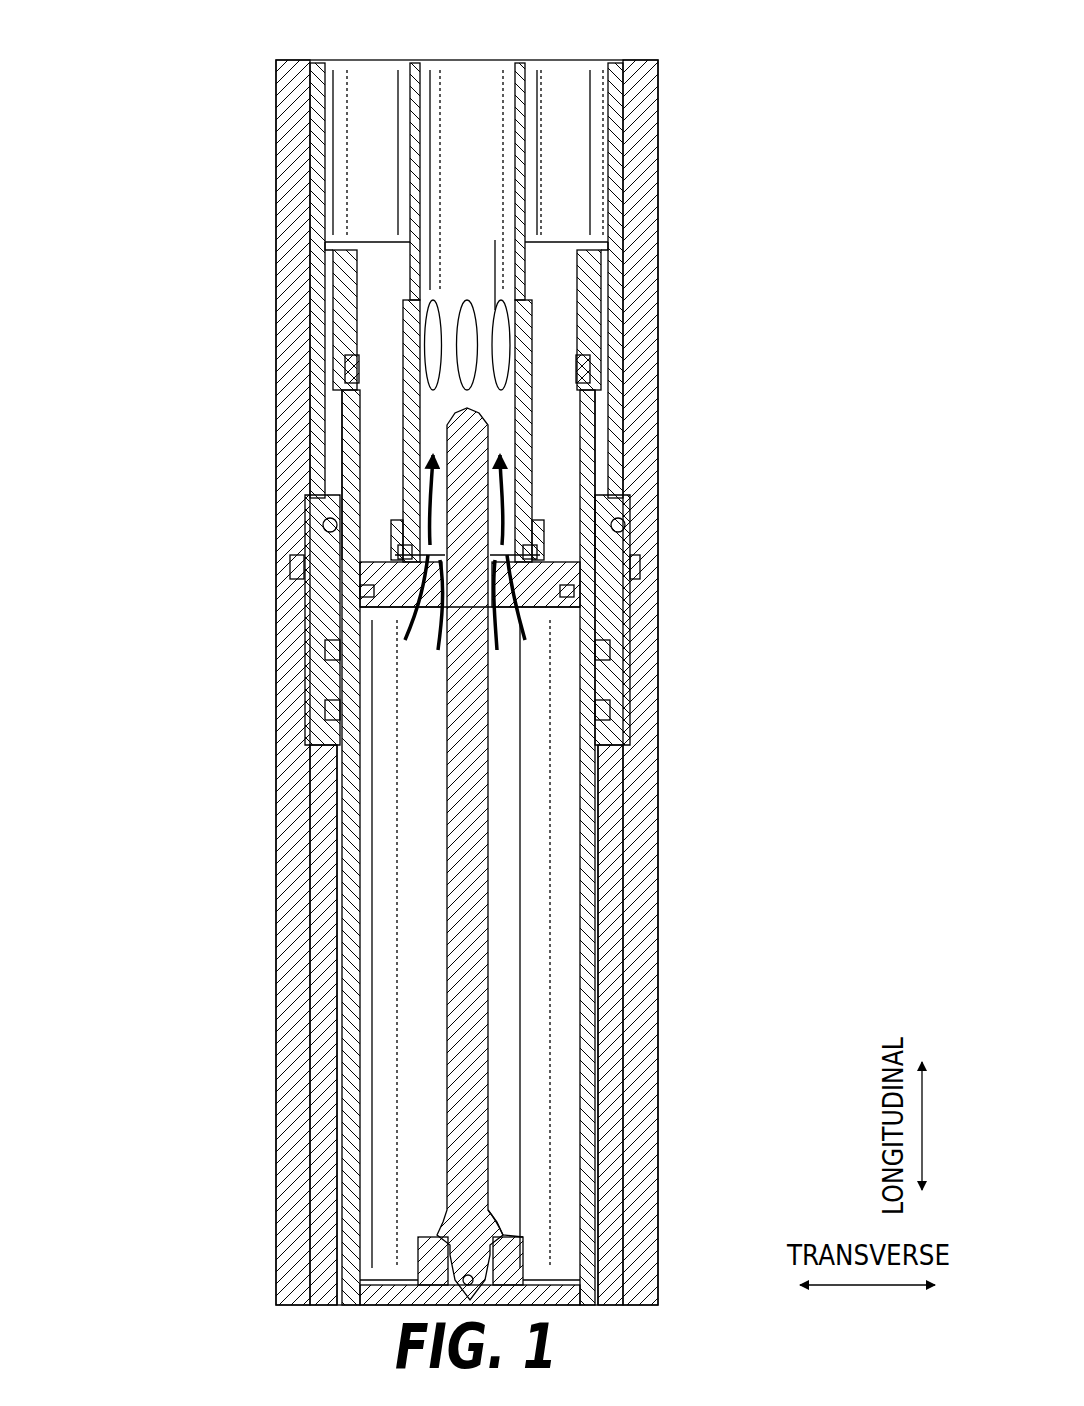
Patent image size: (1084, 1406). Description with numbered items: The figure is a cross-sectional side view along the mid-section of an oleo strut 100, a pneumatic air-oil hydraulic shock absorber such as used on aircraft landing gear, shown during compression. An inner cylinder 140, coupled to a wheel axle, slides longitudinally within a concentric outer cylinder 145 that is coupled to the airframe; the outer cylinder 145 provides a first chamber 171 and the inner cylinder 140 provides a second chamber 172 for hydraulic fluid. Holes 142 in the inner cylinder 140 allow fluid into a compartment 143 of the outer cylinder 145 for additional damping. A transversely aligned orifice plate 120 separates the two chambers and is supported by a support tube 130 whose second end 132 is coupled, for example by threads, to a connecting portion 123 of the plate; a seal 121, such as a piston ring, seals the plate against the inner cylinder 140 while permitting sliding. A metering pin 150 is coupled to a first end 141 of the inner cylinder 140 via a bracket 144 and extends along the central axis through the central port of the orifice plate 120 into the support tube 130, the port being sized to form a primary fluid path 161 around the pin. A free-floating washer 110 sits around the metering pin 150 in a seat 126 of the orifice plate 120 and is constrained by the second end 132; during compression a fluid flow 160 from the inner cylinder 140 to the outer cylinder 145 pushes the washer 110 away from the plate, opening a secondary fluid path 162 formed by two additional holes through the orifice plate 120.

The oleo strut 100 is at (145, 130).
The free-floating washer 110 is at (398, 565).
The orifice plate 120 is at (392, 545).
The seal 121 is at (578, 590).
The connecting portion 123 is at (565, 527).
The seat 126 is at (382, 588).
The support tube 130 is at (418, 183).
The second end 132 is at (405, 545).
The inner cylinder 140 is at (590, 925).
The first end 141 is at (550, 1278).
The holes 142 is at (350, 378).
The compartment 143 is at (335, 425).
The bracket 144 is at (508, 1235).
The outer cylinder 145 is at (620, 158).
The metering pin 150 is at (460, 890).
The fluid flow 160 is at (438, 416).
The primary fluid path 161 is at (494, 652).
The secondary fluid path 162 is at (530, 640).
The first chamber 171 is at (470, 95).
The second chamber 172 is at (560, 1060).